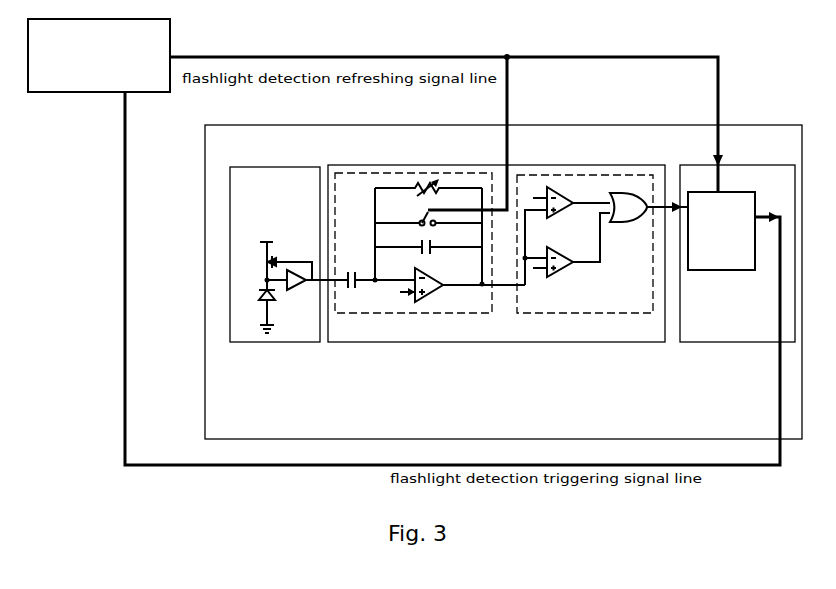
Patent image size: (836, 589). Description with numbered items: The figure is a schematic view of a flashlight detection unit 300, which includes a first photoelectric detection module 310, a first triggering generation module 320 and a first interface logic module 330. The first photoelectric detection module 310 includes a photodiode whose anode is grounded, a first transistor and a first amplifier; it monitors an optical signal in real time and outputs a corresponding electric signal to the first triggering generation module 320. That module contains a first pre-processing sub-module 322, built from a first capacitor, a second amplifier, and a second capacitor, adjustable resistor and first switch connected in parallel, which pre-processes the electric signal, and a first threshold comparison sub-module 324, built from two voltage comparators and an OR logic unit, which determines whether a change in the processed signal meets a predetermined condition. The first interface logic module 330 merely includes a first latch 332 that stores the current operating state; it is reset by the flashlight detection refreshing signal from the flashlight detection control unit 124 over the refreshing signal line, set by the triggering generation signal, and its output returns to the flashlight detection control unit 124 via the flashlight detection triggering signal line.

The flashlight detection control unit 124 is at (99, 55).
The flashlight detection unit 300 is at (503, 282).
The first photoelectric detection module 310 is at (300, 342).
The first triggering generation module 320 is at (503, 342).
The first pre-processing sub-module 322 is at (353, 170).
The first threshold comparison sub-module 324 is at (561, 170).
The first interface logic module 330 is at (738, 342).
The first latch 332 is at (721, 231).